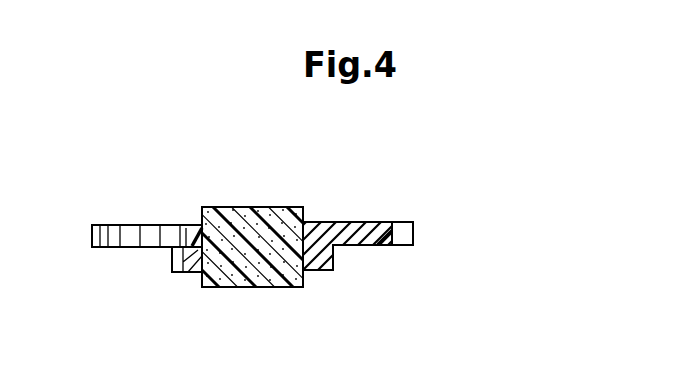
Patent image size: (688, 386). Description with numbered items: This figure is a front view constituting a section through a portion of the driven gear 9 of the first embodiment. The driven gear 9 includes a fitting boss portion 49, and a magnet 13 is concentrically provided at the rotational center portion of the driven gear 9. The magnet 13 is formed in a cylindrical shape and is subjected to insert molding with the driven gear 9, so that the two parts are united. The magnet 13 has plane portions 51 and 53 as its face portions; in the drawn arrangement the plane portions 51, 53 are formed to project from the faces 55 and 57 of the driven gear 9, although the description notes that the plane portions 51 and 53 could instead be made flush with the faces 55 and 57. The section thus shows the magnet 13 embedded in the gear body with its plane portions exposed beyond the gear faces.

The magnet 13 is at (234, 198).
The plane portion 51 is at (280, 207).
The plane portion 53 is at (272, 288).
The face 55 is at (325, 222).
The face 57 is at (315, 272).
The fitting boss portion 49 is at (335, 262).
The driven gear 9 is at (340, 238).